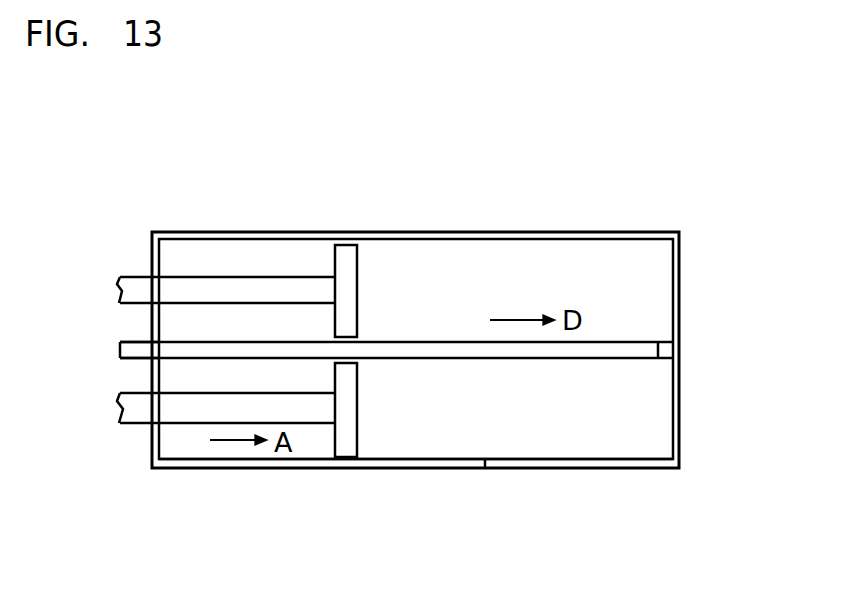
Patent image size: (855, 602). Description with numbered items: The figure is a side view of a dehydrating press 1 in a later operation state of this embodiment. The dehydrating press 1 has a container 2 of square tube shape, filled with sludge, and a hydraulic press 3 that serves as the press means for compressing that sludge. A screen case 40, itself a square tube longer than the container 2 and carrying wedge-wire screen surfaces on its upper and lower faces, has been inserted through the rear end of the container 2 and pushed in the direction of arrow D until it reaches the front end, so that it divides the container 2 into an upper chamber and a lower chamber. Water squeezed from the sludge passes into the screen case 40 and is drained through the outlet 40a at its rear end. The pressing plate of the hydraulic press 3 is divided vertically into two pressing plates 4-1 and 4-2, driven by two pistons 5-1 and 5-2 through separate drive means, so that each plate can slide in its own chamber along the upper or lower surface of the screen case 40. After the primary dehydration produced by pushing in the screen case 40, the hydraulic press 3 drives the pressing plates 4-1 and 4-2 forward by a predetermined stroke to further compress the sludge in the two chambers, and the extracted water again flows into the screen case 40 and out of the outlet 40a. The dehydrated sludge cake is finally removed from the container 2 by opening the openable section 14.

The dehydrating press 1 is at (657, 205).
The container 2 is at (563, 231).
The hydraulic press 3 is at (243, 271).
The pressing plate 4-1 is at (345, 253).
The pressing plate 4-2 is at (345, 453).
The piston 5-1 is at (192, 290).
The piston 5-2 is at (187, 412).
The openable section 14 is at (600, 463).
The screen case 40 is at (440, 350).
The outlet 40a is at (120, 353).